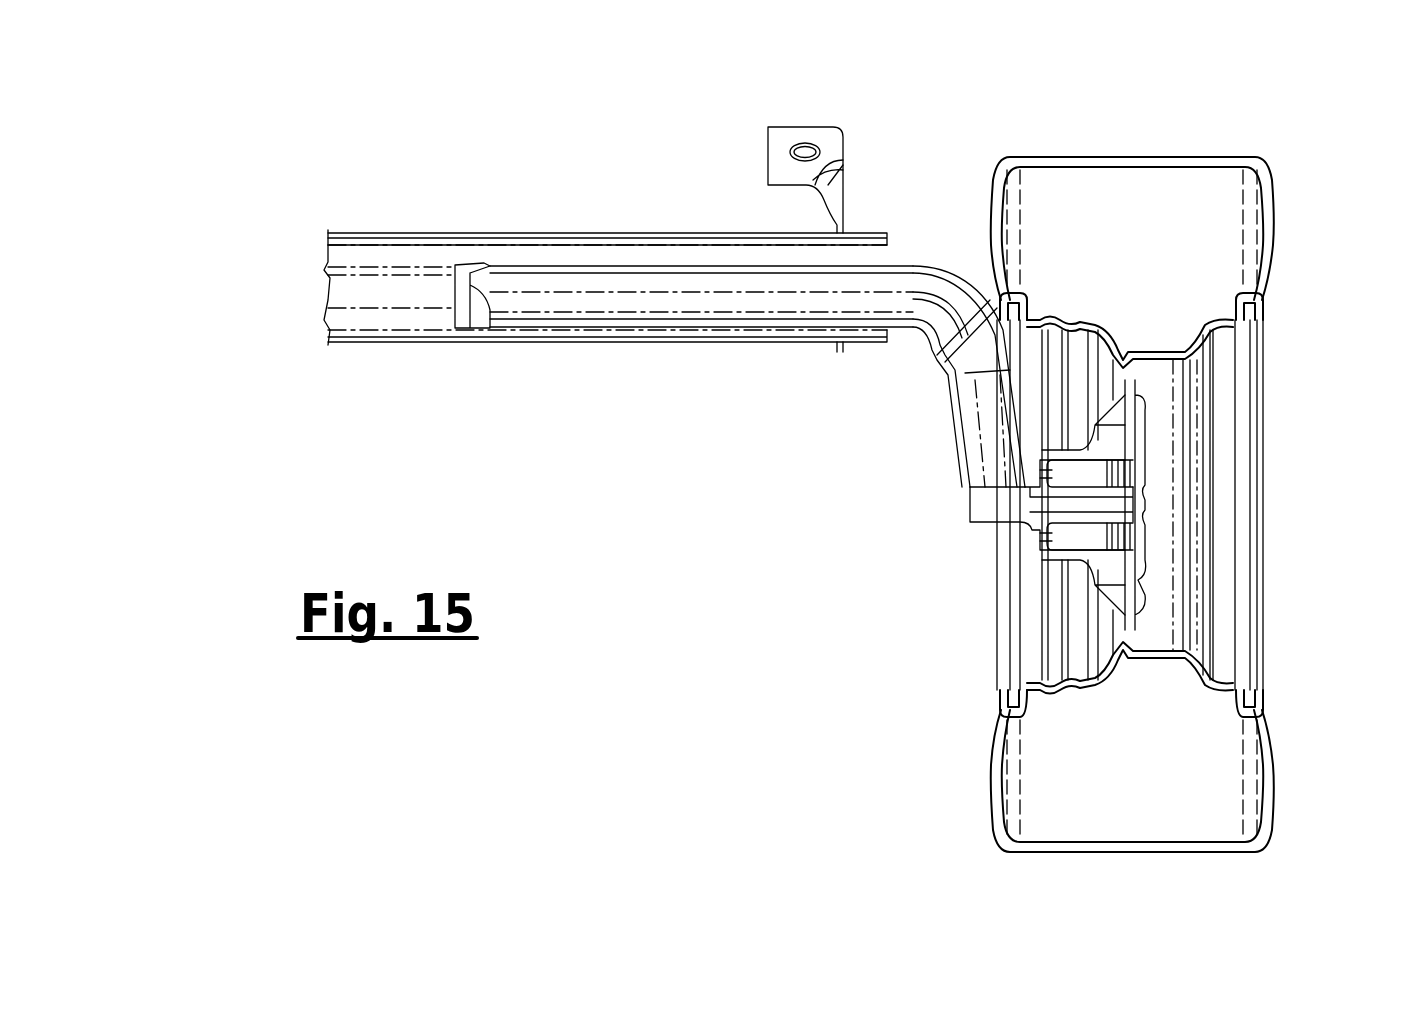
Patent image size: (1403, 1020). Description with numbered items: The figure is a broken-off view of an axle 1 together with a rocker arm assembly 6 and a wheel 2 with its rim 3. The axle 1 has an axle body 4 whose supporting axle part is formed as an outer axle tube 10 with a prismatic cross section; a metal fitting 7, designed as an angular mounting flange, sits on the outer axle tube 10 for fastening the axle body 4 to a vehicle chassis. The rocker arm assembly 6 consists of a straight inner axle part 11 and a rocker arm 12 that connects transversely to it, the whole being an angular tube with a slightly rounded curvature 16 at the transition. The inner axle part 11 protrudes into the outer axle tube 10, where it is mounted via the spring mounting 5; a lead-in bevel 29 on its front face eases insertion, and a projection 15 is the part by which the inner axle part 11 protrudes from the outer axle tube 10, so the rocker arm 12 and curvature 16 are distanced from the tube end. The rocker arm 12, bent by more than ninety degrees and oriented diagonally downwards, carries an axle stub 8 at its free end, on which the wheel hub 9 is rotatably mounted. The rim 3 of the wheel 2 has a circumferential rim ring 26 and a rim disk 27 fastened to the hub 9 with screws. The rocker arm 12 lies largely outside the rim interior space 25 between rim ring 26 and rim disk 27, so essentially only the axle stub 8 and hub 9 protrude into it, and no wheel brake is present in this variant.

The axle 1 is at (390, 200).
The wheel 2 is at (1268, 315).
The rim 3 is at (1232, 688).
The axle body 4 is at (320, 326).
The spring mounting 5 is at (600, 257).
The rocker arm assembly 6 is at (920, 366).
The metal fitting 7 is at (825, 140).
The axle stub 8 is at (990, 508).
The wheel hub 9 is at (1072, 555).
The outer axle tube 10 is at (428, 333).
The inner axle part 11 is at (607, 318).
The rocker arm 12 is at (992, 438).
The projection 15 is at (902, 265).
The curvature 16 is at (953, 258).
The rim interior space 25 is at (1053, 627).
The rim ring 26 is at (1080, 328).
The rim disk 27 is at (1130, 385).
The lead-in bevel 29 is at (465, 307).